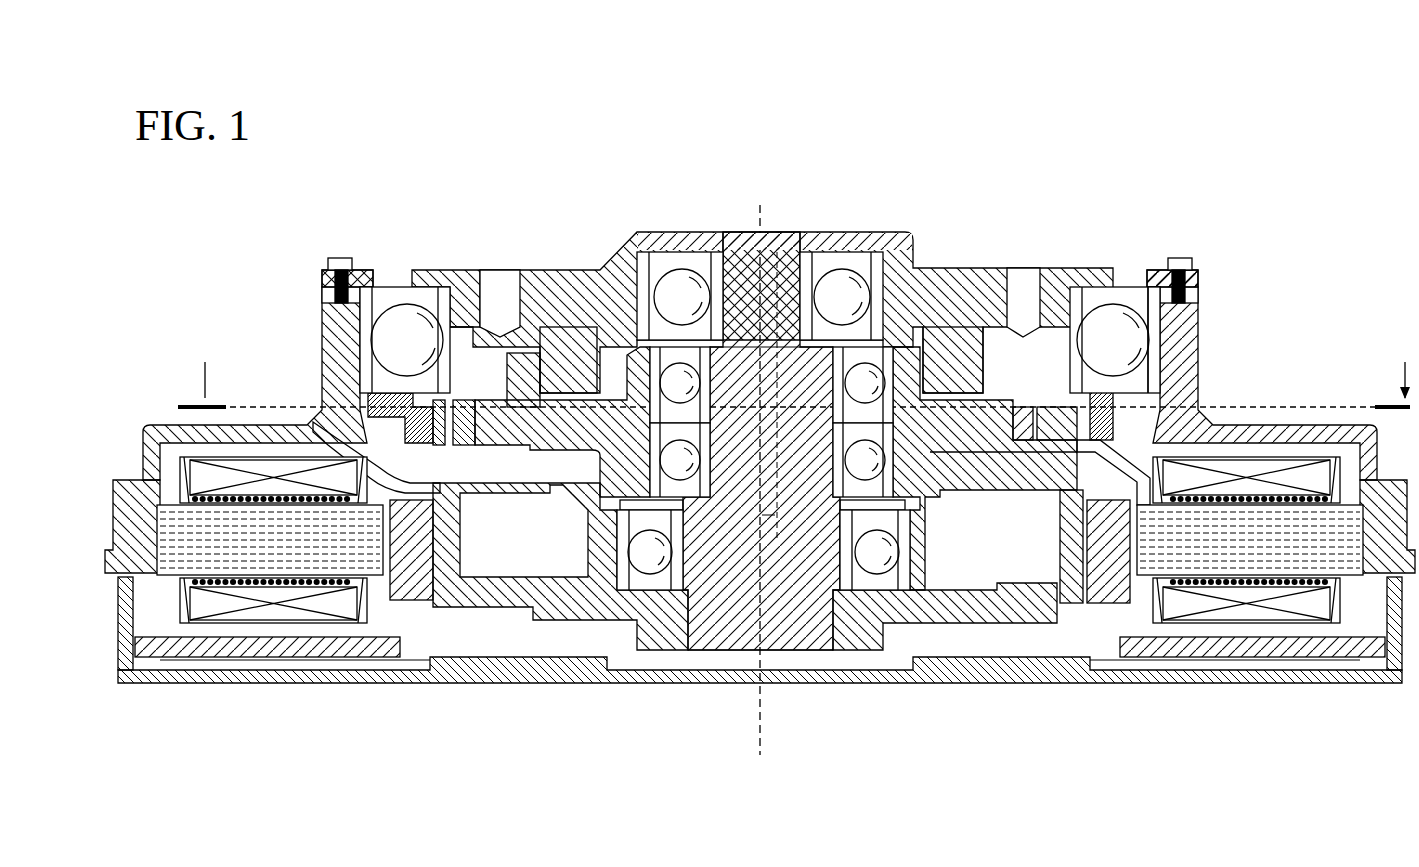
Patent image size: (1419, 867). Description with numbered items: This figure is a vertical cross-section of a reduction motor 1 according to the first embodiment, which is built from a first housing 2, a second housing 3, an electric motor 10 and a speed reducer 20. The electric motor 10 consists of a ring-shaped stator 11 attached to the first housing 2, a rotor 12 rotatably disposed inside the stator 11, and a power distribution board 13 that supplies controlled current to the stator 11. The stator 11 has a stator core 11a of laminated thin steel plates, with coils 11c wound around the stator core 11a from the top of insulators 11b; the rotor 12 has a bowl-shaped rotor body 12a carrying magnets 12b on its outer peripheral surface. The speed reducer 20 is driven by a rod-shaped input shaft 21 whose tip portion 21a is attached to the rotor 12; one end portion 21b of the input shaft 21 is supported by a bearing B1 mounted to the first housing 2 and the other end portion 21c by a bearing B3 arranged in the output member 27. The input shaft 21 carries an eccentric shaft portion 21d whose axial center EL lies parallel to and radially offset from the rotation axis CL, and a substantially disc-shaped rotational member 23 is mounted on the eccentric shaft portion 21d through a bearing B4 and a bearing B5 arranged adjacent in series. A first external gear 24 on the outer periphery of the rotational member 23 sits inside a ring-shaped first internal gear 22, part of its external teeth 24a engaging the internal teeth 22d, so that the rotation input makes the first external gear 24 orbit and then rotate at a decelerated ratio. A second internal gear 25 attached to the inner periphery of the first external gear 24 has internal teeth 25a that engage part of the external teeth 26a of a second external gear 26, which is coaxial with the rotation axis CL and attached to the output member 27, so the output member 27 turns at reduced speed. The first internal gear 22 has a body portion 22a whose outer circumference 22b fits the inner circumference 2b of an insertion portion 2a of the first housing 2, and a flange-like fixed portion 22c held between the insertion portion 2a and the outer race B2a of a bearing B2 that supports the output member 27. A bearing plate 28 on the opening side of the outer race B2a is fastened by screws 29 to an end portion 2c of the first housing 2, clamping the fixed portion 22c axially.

The reduction motor 1 is at (1040, 193).
The first housing 2 is at (760, 387).
The insertion portion 2a is at (1130, 430).
The inner circumference 2b is at (1160, 410).
The end portion 2c is at (330, 298).
The second housing 3 is at (1015, 675).
The electric motor 10 is at (1103, 645).
The stator 11 is at (762, 492).
The stator core 11a is at (1357, 563).
The insulators 11b is at (1337, 442).
The coils 11c is at (1273, 440).
The rotor 12 is at (958, 498).
The rotor body 12a is at (980, 585).
The magnets 12b is at (1063, 510).
The power distribution board 13 is at (1265, 655).
The speed reducer 20 is at (740, 303).
The input shaft 21 is at (785, 459).
The tip portion 21a is at (773, 630).
The one end portion 21b is at (808, 560).
The other end portion 21c is at (790, 290).
The eccentric shaft portion 21d is at (738, 395).
The first internal gear 22 is at (760, 491).
The body portion 22a is at (1100, 442).
The outer circumference 22b is at (760, 540).
The fixed portion 22c is at (322, 396).
The internal teeth 22d is at (440, 432).
The rotational member 23 is at (563, 420).
The first external gear 24 is at (500, 470).
The external teeth 24a is at (466, 447).
The second internal gear 25 is at (540, 367).
The internal teeth 25a is at (517, 322).
The second external gear 26 is at (558, 322).
The external teeth 26a is at (513, 322).
The output member 27 is at (598, 318).
The bearing plate 28 is at (330, 280).
The screws 29 is at (340, 257).
The bearing B1 is at (655, 555).
The bearing B2 is at (768, 291).
The outer race B2a is at (1152, 305).
The bearing B3 is at (845, 290).
The bearing B4 is at (850, 470).
The bearing B5 is at (850, 388).
The rotation axis CL is at (763, 745).
The axial center of the eccentric shaft portion EL is at (780, 522).